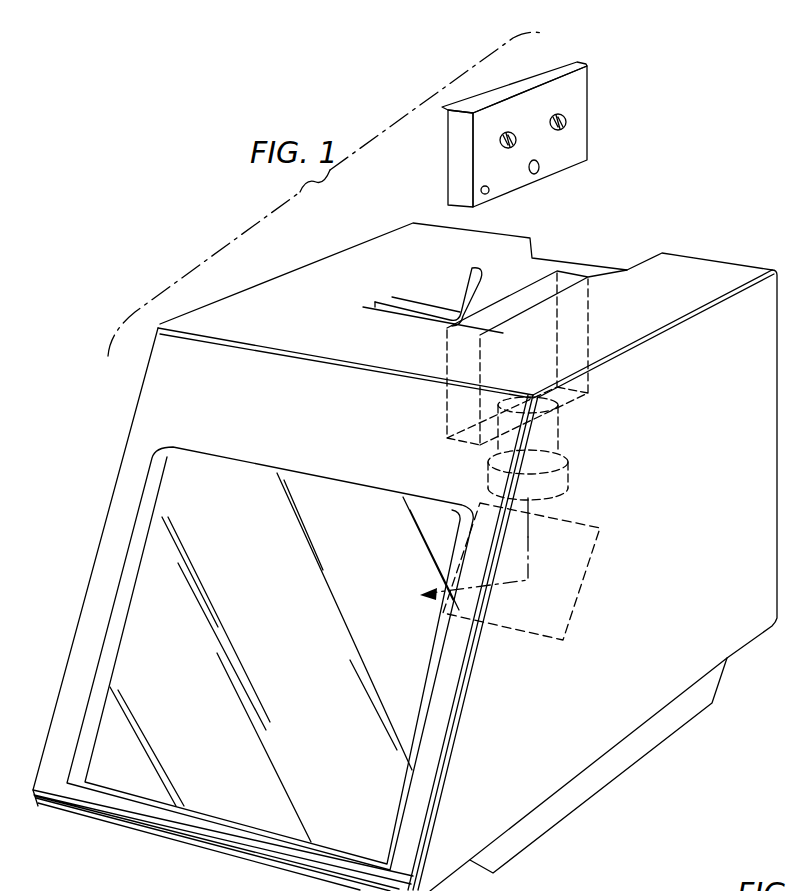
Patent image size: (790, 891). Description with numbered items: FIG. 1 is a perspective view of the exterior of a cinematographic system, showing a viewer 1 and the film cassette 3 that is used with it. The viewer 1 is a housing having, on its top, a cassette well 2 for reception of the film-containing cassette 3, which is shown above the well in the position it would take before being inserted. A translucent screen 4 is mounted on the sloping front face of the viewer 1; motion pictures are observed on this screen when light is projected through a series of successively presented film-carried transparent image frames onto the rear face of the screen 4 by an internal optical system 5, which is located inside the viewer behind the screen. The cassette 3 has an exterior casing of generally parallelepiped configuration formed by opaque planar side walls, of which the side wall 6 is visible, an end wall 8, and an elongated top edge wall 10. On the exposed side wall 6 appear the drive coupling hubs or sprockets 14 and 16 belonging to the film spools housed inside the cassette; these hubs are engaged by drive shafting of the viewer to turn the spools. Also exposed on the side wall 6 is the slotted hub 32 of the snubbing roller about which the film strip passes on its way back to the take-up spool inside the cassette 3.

The viewer 1 is at (405, 557).
The cassette well 2 is at (543, 287).
The cassette 3 is at (517, 124).
The translucent screen 4 is at (417, 687).
The internal optical system 5 is at (583, 500).
The side wall 6 is at (572, 105).
The end wall 8 is at (452, 175).
The top edge wall 10 is at (555, 66).
The drive coupling hub or sprocket 14 is at (565, 127).
The drive coupling hub or sprocket 16 is at (503, 146).
The slotted hub 32 is at (487, 192).